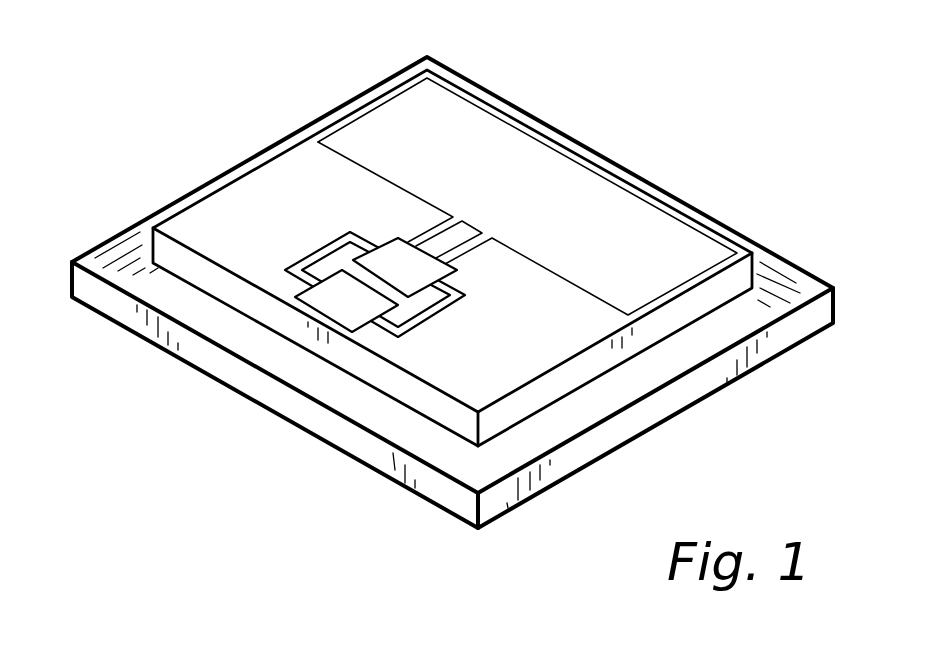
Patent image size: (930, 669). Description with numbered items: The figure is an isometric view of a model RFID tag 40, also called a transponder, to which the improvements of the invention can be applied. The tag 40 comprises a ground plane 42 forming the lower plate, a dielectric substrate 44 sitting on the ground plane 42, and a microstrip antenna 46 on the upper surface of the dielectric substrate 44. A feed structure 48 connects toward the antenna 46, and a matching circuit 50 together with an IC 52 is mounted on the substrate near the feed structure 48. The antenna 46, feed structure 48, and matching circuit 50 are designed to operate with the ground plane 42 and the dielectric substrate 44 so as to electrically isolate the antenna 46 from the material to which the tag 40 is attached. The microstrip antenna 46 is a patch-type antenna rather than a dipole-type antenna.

The model RFID tag 40 is at (108, 76).
The ground plane 42 is at (578, 453).
The dielectric substrate 44 is at (648, 338).
The microstrip antenna 46 is at (592, 198).
The feed structure 48 is at (400, 219).
The matching circuit 50 is at (392, 262).
The IC 52 is at (330, 303).